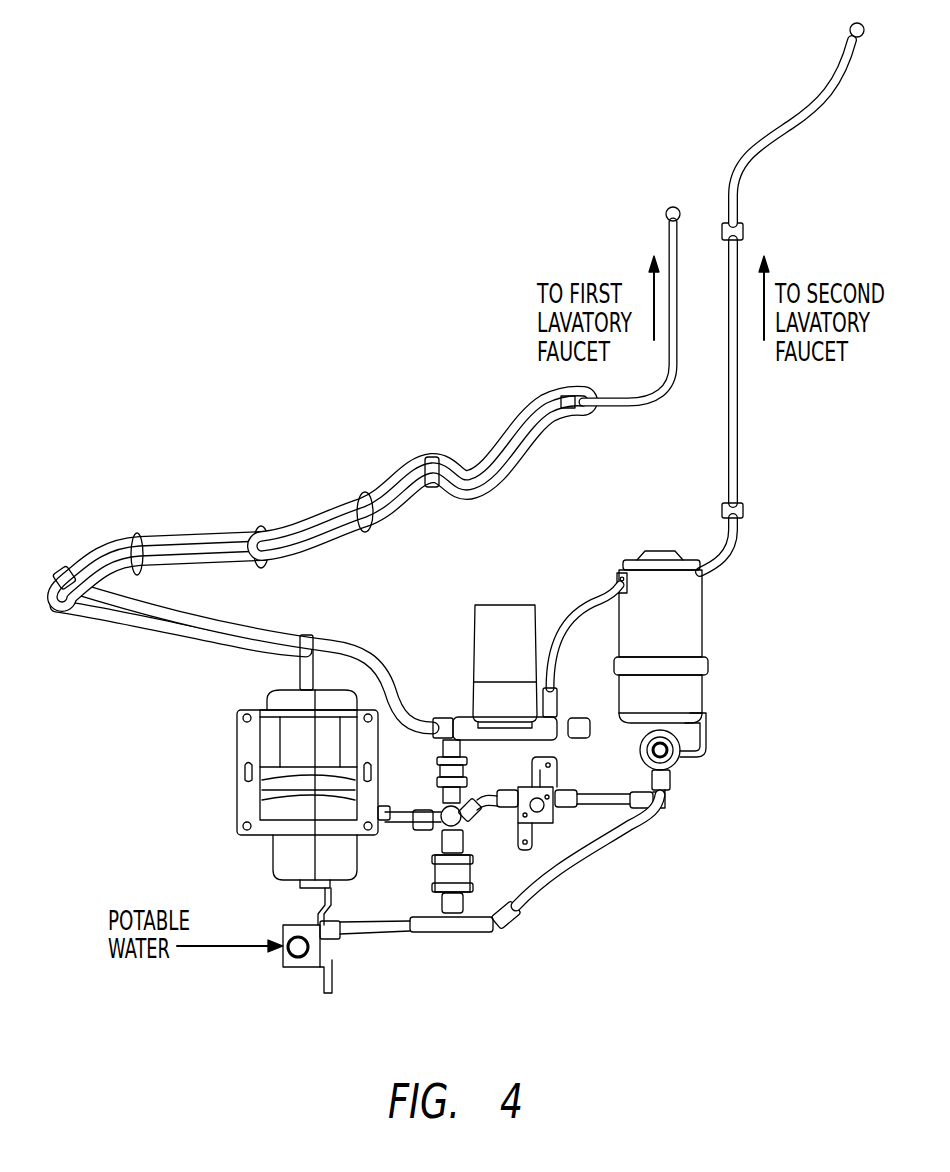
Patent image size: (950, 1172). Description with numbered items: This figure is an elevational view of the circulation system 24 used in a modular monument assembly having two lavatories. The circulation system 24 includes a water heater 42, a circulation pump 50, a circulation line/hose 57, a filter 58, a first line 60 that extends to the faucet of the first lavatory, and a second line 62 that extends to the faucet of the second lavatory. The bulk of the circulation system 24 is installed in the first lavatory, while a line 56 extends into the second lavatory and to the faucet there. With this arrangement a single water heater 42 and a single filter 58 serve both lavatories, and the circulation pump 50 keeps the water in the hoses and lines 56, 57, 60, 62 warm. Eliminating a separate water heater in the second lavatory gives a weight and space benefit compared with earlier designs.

The circulation system 24 is at (203, 410).
The water heater 42 is at (297, 748).
The circulation pump 50 is at (520, 615).
The line 56 is at (470, 446).
The circulation line/hose 57 is at (283, 527).
The filter 58 is at (686, 618).
The first line 60 is at (666, 232).
The second line 62 is at (765, 160).